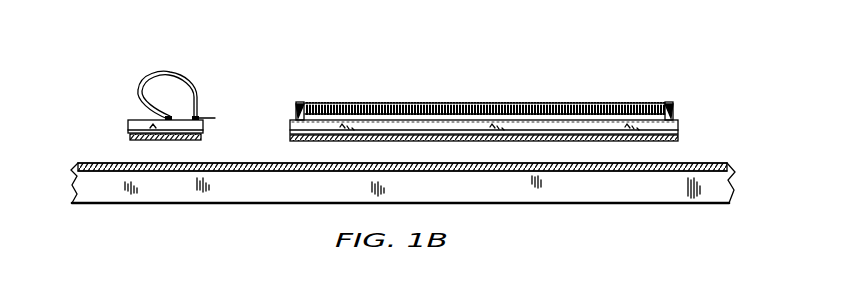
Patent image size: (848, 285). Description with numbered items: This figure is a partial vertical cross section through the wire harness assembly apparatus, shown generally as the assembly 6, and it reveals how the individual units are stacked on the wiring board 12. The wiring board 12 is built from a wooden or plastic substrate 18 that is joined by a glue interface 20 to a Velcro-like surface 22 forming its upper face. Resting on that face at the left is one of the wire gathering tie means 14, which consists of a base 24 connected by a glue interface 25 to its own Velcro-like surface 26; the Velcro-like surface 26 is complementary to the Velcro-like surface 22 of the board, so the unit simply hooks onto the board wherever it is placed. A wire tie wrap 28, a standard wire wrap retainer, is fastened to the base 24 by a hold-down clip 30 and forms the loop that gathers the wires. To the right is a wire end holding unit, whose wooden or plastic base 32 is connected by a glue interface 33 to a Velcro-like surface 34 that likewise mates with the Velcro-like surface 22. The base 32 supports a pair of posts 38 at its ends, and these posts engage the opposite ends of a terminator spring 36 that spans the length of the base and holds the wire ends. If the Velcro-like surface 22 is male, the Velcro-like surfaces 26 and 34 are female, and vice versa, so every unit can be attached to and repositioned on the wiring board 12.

The electronic assembly 6 is at (457, 44).
The wiring board 12 is at (748, 152).
The wire gathering tie means 14 is at (197, 66).
The substrate 18 is at (72, 204).
The glue interface 20 is at (72, 178).
The Velcro-like surface 22 is at (80, 164).
The base 24 is at (204, 132).
The glue interface 25 is at (128, 133).
The Velcro-like surface 26 is at (190, 136).
The wire tie wrap 28 is at (160, 73).
The hold-down clip 30 is at (167, 117).
The base 32 is at (289, 127).
The glue interface 33 is at (678, 133).
The Velcro-like surface 34 is at (292, 138).
The terminator spring 36 is at (340, 103).
The posts 38 is at (297, 112).